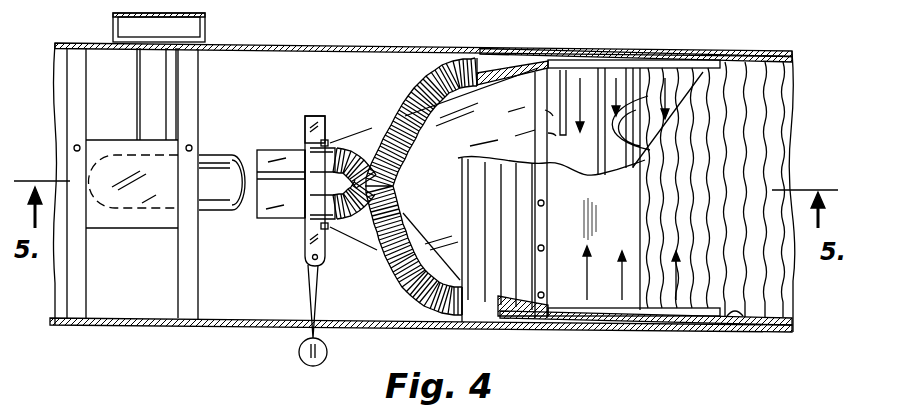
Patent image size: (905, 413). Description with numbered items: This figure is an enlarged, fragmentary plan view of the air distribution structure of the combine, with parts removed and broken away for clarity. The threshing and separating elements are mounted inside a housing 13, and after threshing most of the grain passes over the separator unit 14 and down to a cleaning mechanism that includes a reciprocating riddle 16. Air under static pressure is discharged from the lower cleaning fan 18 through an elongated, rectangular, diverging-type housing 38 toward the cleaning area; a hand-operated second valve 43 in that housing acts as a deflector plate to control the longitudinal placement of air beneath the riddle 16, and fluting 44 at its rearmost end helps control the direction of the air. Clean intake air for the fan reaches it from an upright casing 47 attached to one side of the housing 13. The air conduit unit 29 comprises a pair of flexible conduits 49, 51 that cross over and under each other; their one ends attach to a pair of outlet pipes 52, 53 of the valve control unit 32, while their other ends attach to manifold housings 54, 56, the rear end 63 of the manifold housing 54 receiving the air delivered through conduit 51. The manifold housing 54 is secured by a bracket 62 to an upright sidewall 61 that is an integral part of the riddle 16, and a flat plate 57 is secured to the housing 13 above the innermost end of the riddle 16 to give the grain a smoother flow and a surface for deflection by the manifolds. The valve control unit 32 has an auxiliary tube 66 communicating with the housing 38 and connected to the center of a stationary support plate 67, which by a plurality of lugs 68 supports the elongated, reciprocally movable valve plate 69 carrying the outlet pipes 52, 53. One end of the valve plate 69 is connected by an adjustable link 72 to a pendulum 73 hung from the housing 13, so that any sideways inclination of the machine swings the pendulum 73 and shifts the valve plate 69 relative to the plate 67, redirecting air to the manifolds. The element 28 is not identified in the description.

The housing 13 is at (355, 46).
The separator unit 14 is at (490, 270).
The riddle 16 is at (790, 58).
The cleaning fan 18 is at (137, 250).
The motor 28 is at (217, 146).
The air conduit unit 29 is at (375, 88).
The valve control unit 32 is at (283, 232).
The diverging-type housing 38 is at (444, 161).
The second valve 43 is at (548, 112).
The fluting 44 is at (553, 135).
The upright casing 47 is at (206, 26).
The flexible conduit 49 is at (400, 282).
The flexible conduit 51 is at (437, 68).
The outlet pipe 52 is at (329, 143).
The outlet pipe 53 is at (329, 229).
The manifold housing 54 is at (555, 66).
The manifold housing 56 is at (667, 310).
The flat plate 57 is at (605, 290).
The upright sidewall 61 is at (600, 56).
The bracket 62 is at (740, 68).
The rear end 63 is at (515, 58).
The auxiliary tube 66 is at (258, 182).
The support plate 67 is at (306, 140).
The lug 68 is at (326, 140).
The valve plate 69 is at (313, 118).
The adjustable link 72 is at (308, 292).
The pendulum 73 is at (299, 353).